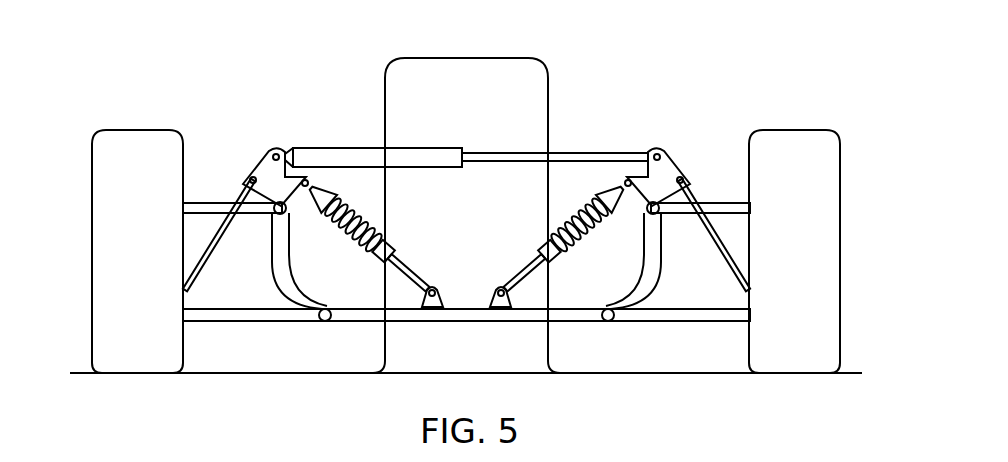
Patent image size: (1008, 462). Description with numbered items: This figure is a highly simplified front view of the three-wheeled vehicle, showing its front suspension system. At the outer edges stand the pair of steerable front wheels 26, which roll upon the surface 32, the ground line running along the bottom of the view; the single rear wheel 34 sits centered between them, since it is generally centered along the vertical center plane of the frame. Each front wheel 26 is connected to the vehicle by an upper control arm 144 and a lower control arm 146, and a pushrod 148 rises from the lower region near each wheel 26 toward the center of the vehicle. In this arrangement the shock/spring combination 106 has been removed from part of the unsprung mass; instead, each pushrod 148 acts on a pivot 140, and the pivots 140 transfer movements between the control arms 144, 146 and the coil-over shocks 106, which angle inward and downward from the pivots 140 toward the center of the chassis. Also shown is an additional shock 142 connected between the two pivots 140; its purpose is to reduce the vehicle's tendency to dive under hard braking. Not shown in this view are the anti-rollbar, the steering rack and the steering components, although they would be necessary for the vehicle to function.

The steerable front wheel 26 is at (130, 130).
The surface 32 is at (642, 375).
The rear wheel 34 is at (403, 358).
The shock/spring combination 106 is at (370, 225).
The pivot 140 is at (267, 170).
The additional shock 142 is at (437, 150).
The upper control arm 144 is at (217, 202).
The lower control arm 146 is at (225, 313).
The pushrod 148 is at (210, 237).